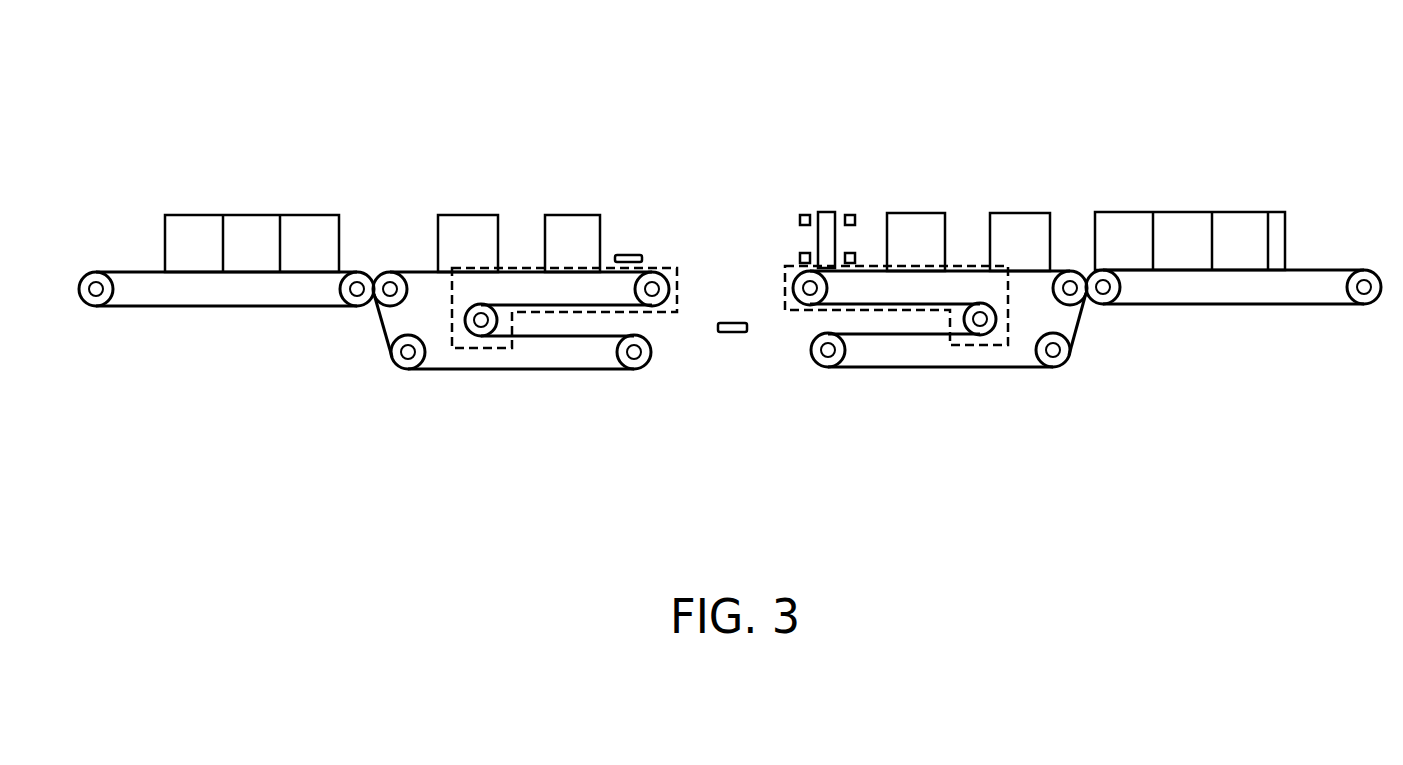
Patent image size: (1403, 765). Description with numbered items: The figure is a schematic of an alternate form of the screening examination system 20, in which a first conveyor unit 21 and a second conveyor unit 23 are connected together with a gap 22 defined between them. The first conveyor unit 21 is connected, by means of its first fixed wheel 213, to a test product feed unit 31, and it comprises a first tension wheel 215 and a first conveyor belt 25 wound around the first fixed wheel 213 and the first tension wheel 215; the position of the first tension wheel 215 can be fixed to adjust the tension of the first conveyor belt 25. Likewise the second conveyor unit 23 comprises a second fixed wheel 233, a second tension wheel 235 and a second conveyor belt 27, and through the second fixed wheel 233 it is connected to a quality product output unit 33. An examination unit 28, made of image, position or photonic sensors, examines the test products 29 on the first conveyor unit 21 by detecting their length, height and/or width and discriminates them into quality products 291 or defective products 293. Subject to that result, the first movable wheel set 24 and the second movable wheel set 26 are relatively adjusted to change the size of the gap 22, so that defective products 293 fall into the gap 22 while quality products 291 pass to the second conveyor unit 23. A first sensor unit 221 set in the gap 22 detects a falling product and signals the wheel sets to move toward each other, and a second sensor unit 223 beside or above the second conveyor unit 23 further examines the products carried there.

The screening examination system 20 is at (382, 84).
The first conveyor unit 21 is at (944, 284).
The first fixed wheel 213 is at (1075, 296).
The first tension wheel 215 is at (1055, 365).
The gap 22 is at (684, 299).
The first sensor unit 221 is at (730, 334).
The second sensor unit 223 is at (635, 253).
The second conveyor unit 23 is at (513, 341).
The second fixed wheel 233 is at (389, 297).
The second tension wheel 235 is at (407, 369).
The first movable wheel set 24 is at (795, 312).
The first conveyor belt 25 is at (884, 368).
The second movable wheel set 26 is at (672, 313).
The second conveyor belt 27 is at (598, 370).
The examination unit 28 is at (797, 192).
The test products 29 is at (879, 188).
The quality products 291 is at (911, 213).
The defective products 293 is at (829, 212).
The test product feed unit 31 is at (1257, 325).
The quality product output unit 33 is at (207, 330).